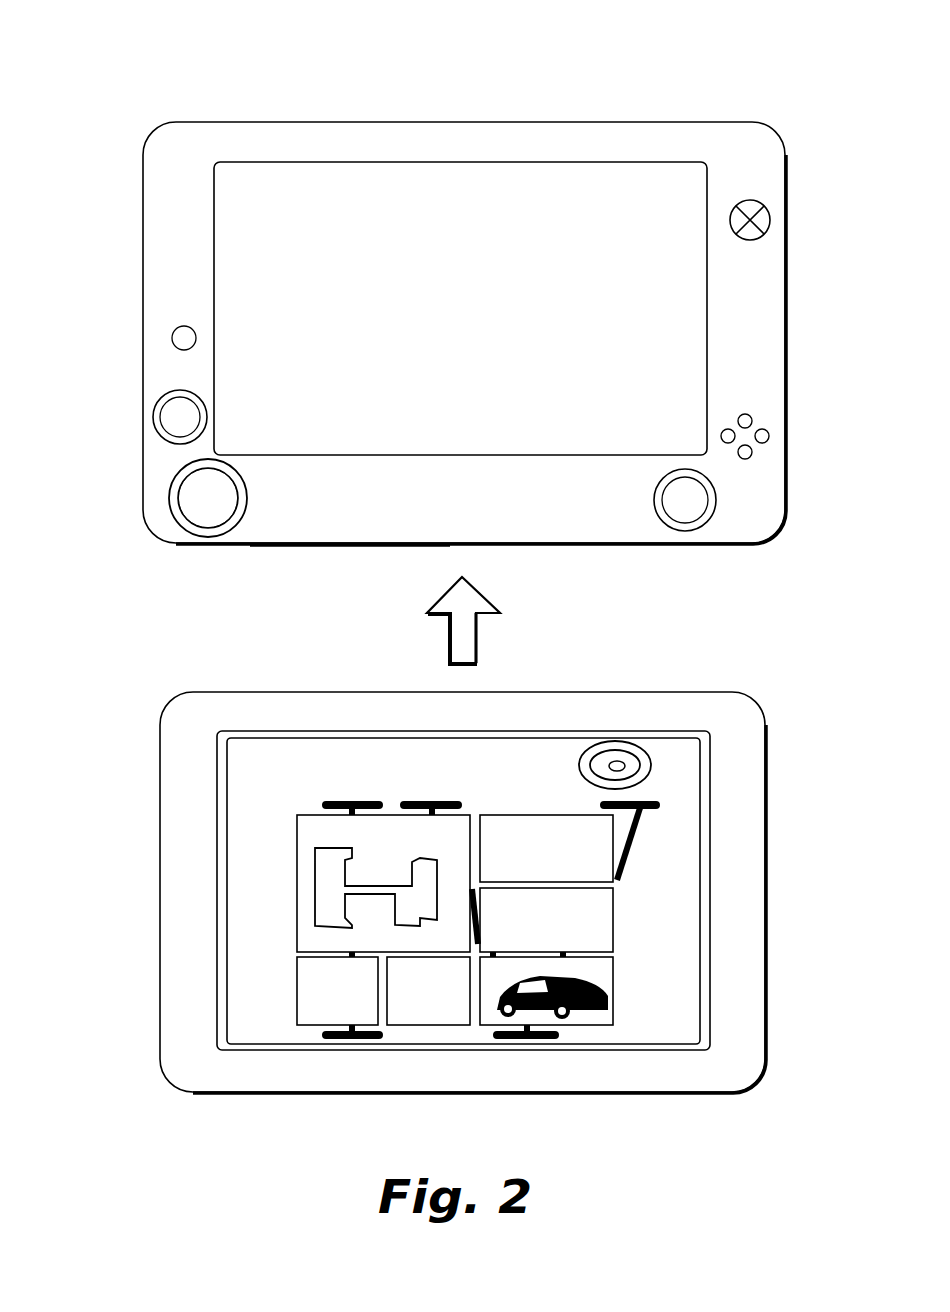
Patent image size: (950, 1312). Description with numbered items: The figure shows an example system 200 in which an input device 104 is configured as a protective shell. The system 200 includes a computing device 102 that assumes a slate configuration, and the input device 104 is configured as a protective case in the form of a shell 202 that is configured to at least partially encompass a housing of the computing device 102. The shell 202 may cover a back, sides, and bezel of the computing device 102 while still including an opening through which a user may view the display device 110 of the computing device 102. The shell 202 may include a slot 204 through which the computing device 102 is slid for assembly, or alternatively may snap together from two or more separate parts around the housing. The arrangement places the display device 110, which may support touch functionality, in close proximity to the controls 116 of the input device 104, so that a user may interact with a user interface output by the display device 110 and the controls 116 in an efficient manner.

The system 200 is at (133, 54).
The input device 104 is at (777, 82).
The shell 202 is at (463, 122).
The controls 116 is at (120, 296).
The slot 204 is at (312, 566).
The computing device 102 is at (167, 670).
The display device 110 is at (686, 1023).